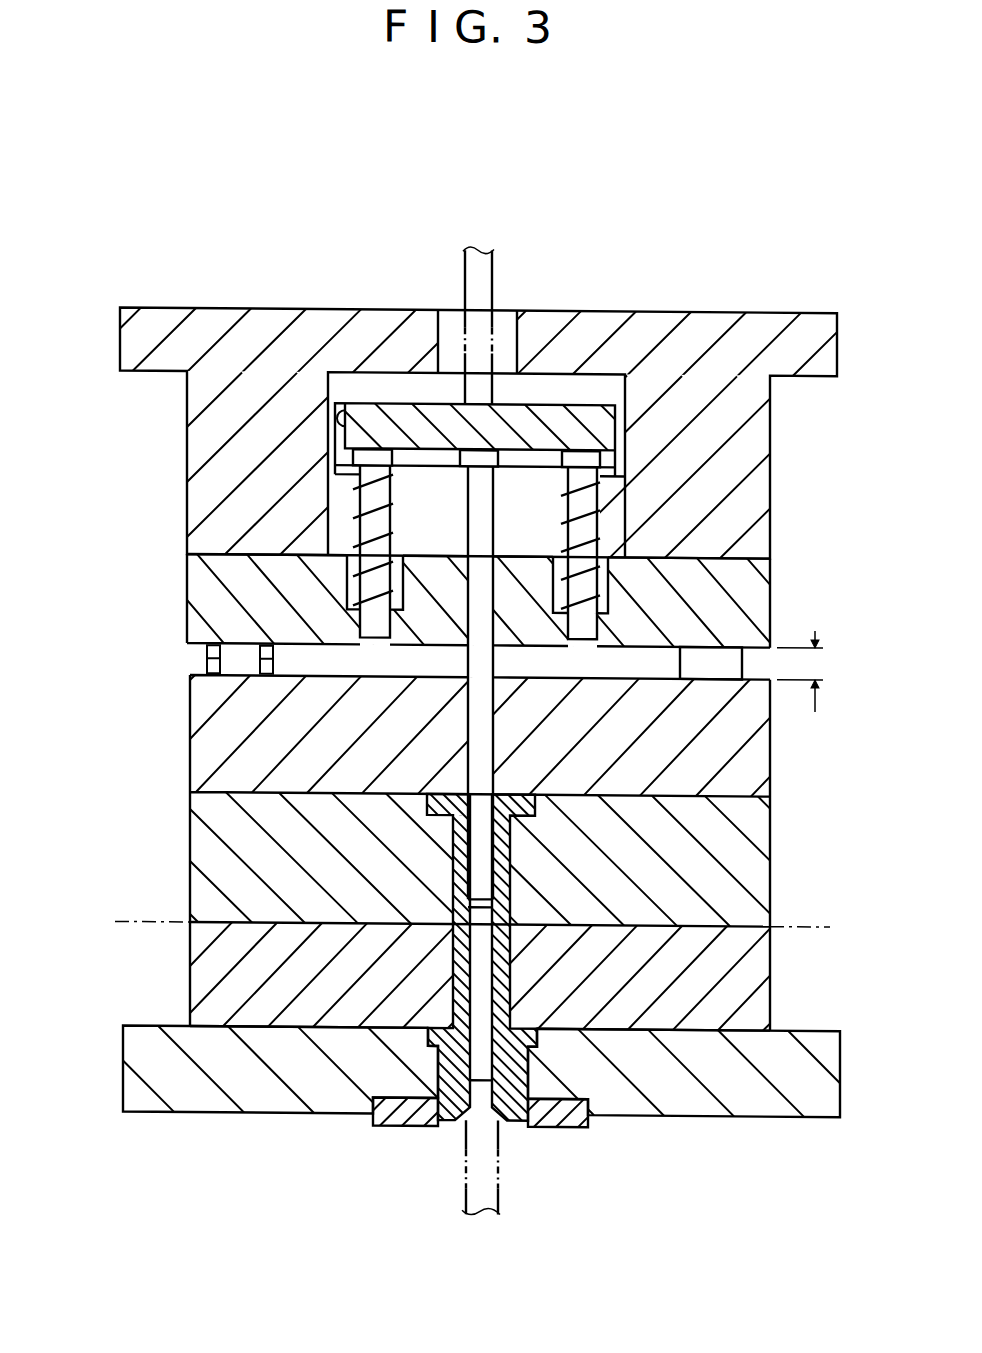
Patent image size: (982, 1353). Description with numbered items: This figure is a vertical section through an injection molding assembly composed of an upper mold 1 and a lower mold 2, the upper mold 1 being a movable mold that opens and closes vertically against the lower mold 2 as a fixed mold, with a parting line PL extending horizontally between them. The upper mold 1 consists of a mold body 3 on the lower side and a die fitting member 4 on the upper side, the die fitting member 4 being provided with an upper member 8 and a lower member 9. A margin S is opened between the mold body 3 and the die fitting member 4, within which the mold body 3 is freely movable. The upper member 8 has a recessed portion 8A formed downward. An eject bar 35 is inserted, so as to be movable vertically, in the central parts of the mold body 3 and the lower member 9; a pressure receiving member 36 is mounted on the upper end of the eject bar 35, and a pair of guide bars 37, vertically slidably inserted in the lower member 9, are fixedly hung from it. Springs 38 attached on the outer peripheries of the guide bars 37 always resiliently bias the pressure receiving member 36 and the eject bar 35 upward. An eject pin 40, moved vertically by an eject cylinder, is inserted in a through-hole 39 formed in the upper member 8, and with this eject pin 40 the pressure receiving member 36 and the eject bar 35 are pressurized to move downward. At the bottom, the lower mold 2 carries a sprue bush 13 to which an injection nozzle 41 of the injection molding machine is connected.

The upper mold 1 is at (152, 702).
The lower mold 2 is at (130, 989).
The mold body 3 is at (197, 763).
The die fitting member 4 is at (190, 463).
The upper member 8 is at (120, 341).
The recessed portion 8A is at (336, 418).
The lower member 9 is at (197, 619).
The sprue bush 13 is at (456, 1114).
The eject bar 35 is at (496, 520).
The pressure receiving member 36 is at (551, 408).
The guide bars 37 is at (356, 583).
The springs 38 is at (352, 512).
The through-hole 39 is at (436, 324).
The eject pin 40 is at (494, 283).
The injection nozzle 41 is at (500, 1190).
The margin S is at (815, 672).
The parting line PL is at (448, 924).